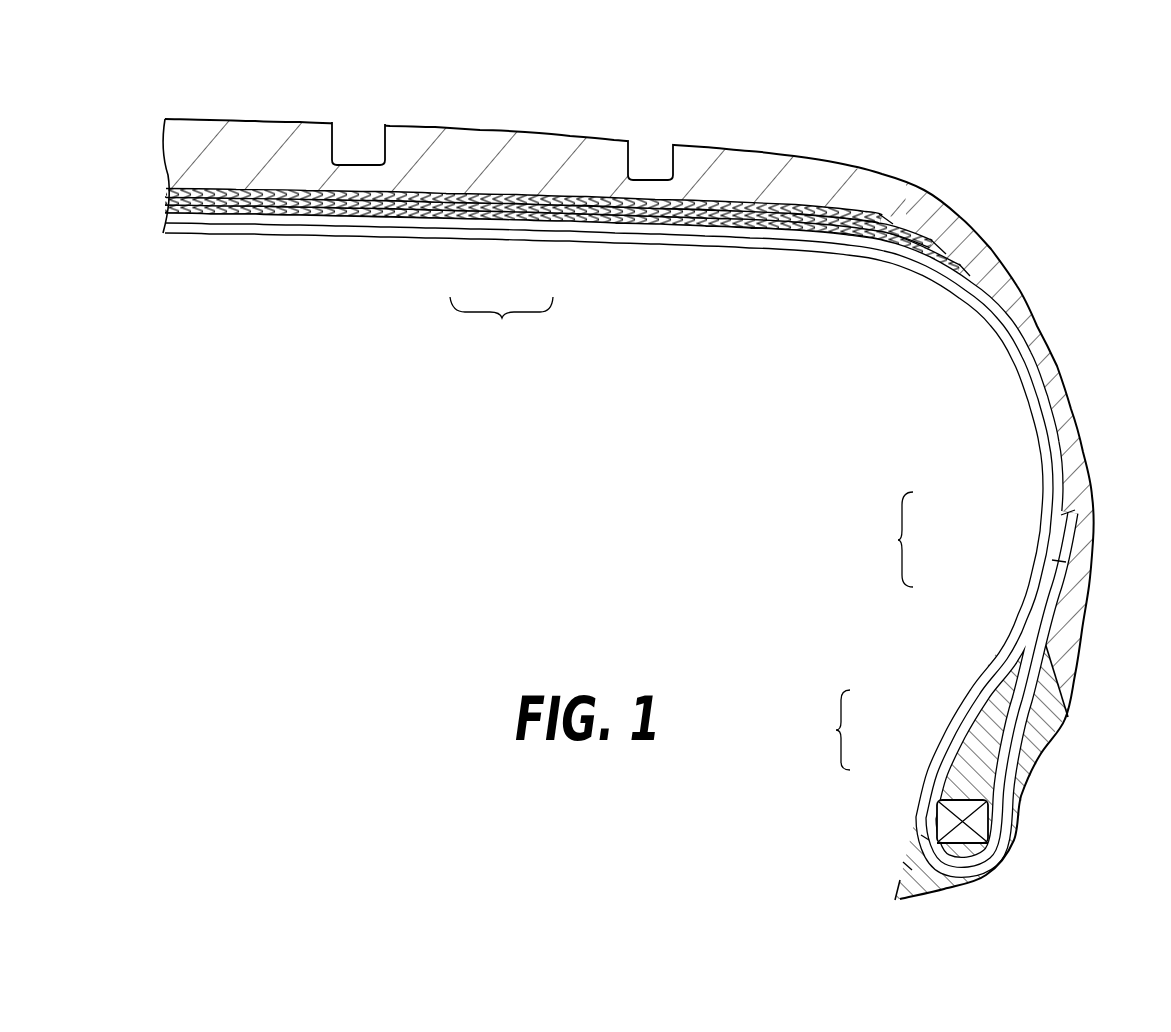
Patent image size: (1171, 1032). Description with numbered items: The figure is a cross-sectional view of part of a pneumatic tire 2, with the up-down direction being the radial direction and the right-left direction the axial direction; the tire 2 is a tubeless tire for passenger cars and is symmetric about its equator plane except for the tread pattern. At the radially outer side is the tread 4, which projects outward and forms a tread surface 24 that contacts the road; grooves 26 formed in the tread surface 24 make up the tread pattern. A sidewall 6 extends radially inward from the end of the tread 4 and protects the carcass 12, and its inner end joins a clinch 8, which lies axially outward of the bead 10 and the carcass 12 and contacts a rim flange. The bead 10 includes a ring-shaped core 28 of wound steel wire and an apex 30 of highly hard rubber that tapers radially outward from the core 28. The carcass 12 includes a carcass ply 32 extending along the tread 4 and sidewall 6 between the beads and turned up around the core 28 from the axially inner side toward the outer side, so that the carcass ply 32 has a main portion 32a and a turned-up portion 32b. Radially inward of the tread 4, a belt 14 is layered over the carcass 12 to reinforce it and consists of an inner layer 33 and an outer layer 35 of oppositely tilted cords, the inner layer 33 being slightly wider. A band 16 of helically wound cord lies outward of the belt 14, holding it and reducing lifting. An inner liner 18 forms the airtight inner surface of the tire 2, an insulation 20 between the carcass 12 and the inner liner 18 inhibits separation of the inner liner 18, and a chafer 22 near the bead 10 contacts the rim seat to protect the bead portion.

The pneumatic tire 2 is at (1137, 118).
The tread 4 is at (557, 140).
The sidewall 6 is at (1082, 478).
The clinch 8 is at (1047, 715).
The bead 10 is at (894, 766).
The carcass 12 is at (616, 545).
The belt 14 is at (710, 285).
The band 16 is at (742, 200).
The inner liner 18 is at (907, 868).
The insulation 20 is at (920, 840).
The chafer 22 is at (897, 888).
The tread surface 24 is at (478, 128).
The groove 26 is at (386, 138).
The core 28 is at (958, 797).
The apex 30 is at (987, 715).
The carcass ply 32 is at (616, 545).
The main portion 32a is at (1058, 518).
The turned-up portion 32b is at (1056, 563).
The inner layer 33 is at (465, 214).
The outer layer 35 is at (541, 205).